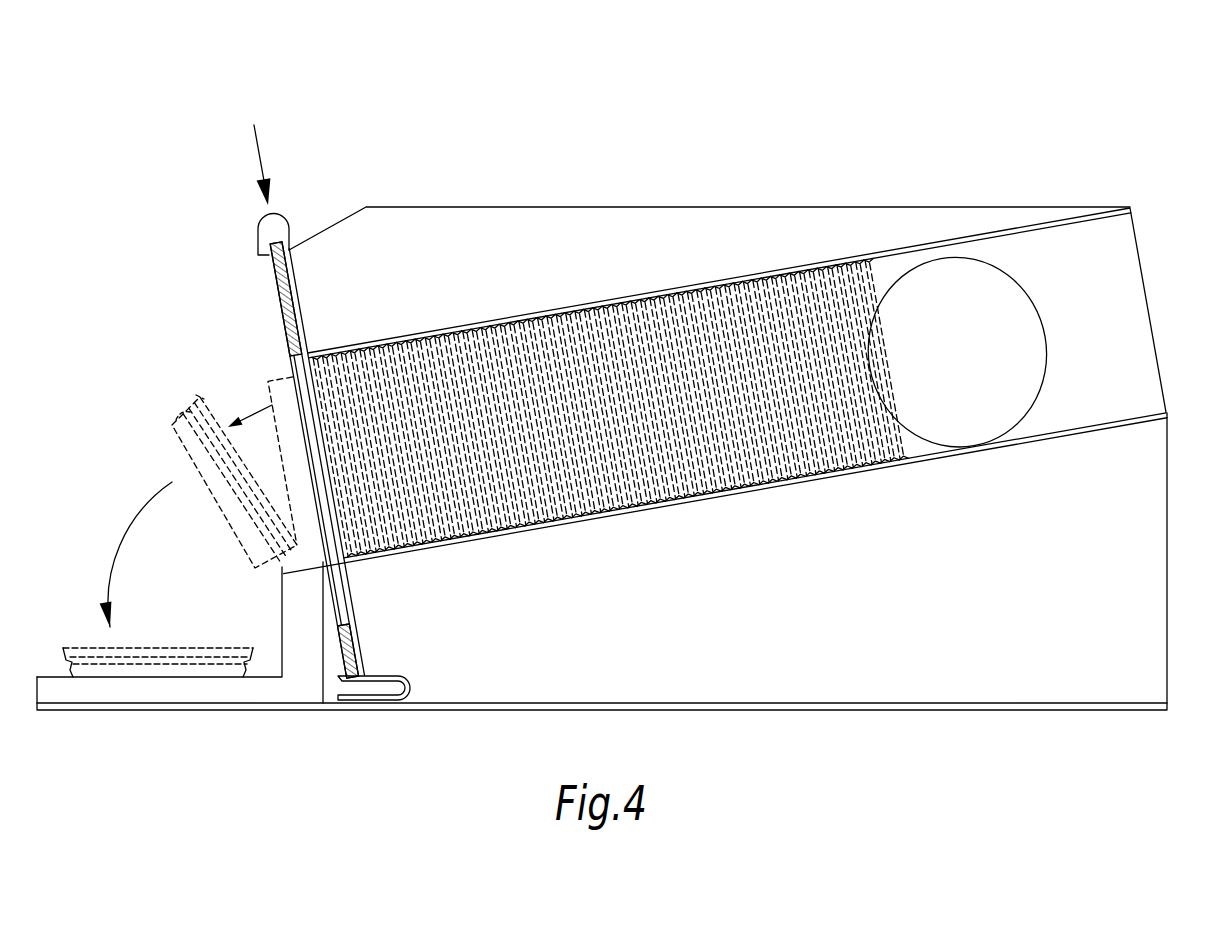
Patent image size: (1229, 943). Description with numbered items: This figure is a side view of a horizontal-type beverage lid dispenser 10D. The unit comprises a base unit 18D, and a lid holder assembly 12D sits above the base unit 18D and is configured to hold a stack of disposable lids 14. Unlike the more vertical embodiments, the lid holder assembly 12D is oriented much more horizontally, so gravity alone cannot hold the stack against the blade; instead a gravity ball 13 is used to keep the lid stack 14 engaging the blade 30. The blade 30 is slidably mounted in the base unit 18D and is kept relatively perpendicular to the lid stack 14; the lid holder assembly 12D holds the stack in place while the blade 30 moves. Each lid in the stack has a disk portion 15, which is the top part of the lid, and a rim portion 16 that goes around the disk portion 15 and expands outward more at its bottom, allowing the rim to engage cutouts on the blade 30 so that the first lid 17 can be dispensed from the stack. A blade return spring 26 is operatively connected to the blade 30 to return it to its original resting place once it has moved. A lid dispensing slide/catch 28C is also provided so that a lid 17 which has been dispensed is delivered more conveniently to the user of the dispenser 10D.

The beverage lid dispenser 10D is at (290, 70).
The blade 30 is at (266, 265).
The lid holder assembly 12D is at (613, 300).
The stack of disposable lids 14 is at (500, 327).
The gravity ball 13 is at (1021, 299).
The rim portion 16 is at (200, 397).
The lid 17 is at (182, 418).
The disk portion 15 is at (182, 447).
The lid dispensing slide/catch 28C is at (310, 563).
The blade return spring 26 is at (370, 677).
The base unit 18D is at (1135, 668).